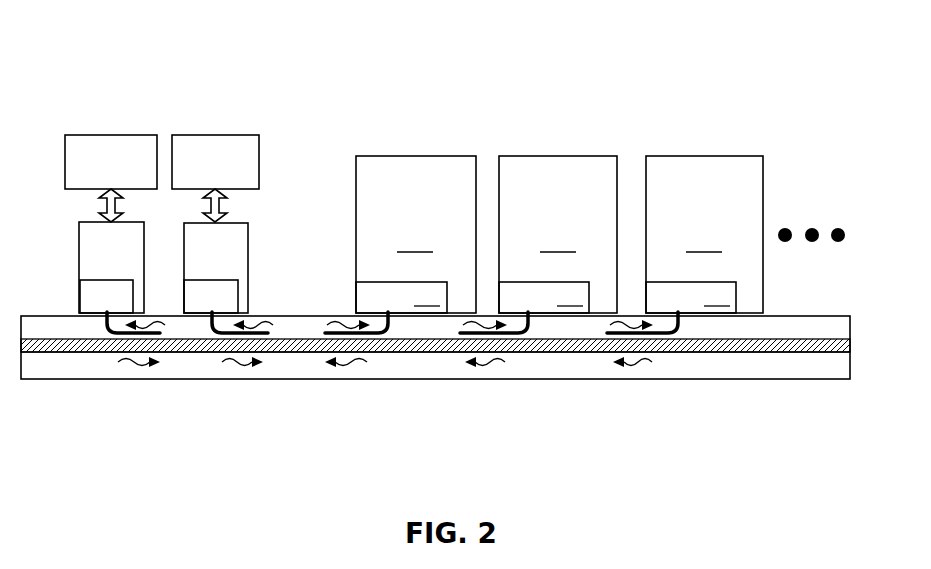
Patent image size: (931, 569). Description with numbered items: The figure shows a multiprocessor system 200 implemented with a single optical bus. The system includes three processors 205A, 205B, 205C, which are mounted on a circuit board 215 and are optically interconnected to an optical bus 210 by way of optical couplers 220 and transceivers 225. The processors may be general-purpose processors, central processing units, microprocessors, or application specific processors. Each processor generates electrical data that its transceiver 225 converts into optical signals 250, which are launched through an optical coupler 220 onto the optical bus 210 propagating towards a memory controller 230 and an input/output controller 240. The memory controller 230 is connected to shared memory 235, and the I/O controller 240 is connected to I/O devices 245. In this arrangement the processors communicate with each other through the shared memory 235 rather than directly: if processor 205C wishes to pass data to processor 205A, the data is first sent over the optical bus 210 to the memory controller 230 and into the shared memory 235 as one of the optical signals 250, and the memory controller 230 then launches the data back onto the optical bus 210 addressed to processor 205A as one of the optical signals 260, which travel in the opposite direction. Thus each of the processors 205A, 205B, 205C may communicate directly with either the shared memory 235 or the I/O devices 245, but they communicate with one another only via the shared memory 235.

The multiprocessor system 200 is at (778, 88).
The processor 205A is at (416, 234).
The processor 205B is at (558, 234).
The processor 205C is at (704, 234).
The optical bus 210 is at (793, 338).
The circuit board 215 is at (839, 376).
The optical coupler 220 is at (108, 328).
The transceiver 225 is at (80, 310).
The memory controller 230 is at (248, 235).
The shared memory 235 is at (217, 135).
The input/output controller 240 is at (79, 263).
The I/O devices 245 is at (110, 135).
The optical signals 250 is at (167, 323).
The optical signals 260 is at (140, 363).